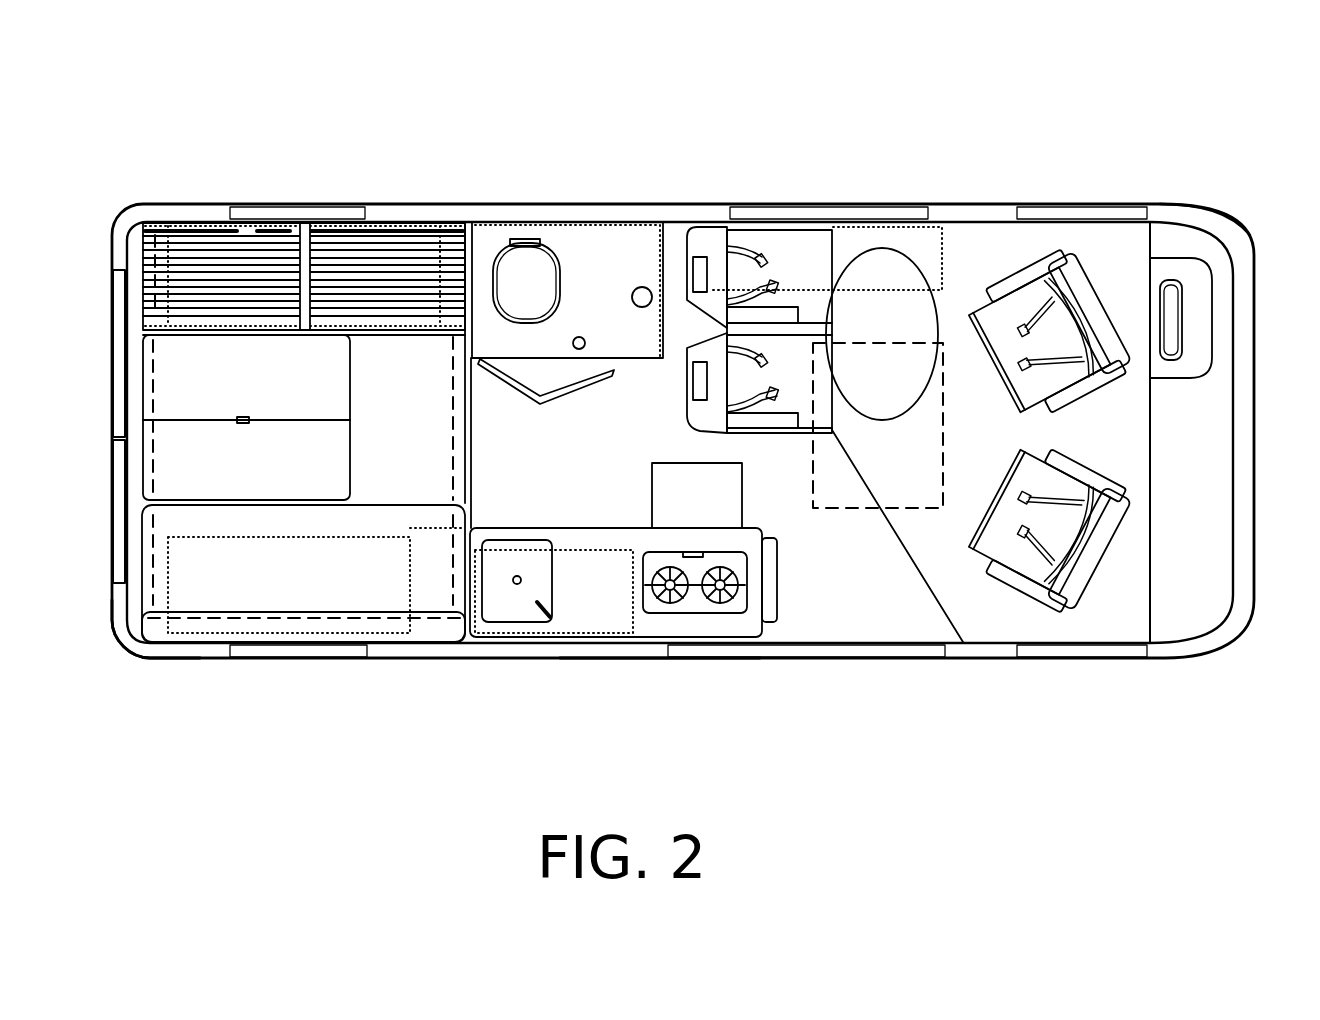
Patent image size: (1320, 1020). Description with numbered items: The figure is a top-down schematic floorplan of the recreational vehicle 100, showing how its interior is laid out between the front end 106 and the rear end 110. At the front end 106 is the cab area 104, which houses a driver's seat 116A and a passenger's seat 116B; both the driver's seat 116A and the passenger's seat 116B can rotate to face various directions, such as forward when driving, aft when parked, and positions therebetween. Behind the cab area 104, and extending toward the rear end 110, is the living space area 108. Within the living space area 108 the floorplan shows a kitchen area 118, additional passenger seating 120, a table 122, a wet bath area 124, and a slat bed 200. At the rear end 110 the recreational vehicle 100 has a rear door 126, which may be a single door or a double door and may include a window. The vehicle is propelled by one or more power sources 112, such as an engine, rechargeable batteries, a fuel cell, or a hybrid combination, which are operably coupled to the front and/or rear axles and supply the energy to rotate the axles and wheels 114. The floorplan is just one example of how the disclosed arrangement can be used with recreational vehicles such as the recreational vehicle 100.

The recreational vehicle 100 is at (106, 104).
The cab area 104 is at (1242, 205).
The front end 106 is at (1190, 215).
The living space area 108 is at (658, 690).
The rear end 110 is at (114, 617).
The power source 112 is at (1207, 525).
The wheels 114 is at (1177, 323).
The driver's seat 116A is at (1022, 288).
The passenger's seat 116B is at (1067, 582).
The kitchen area 118 is at (623, 615).
The additional passenger seating 120 is at (718, 247).
The table 122 is at (862, 272).
The wet bath area 124 is at (555, 252).
The rear door 126 is at (113, 402).
The slat bed 200 is at (205, 253).